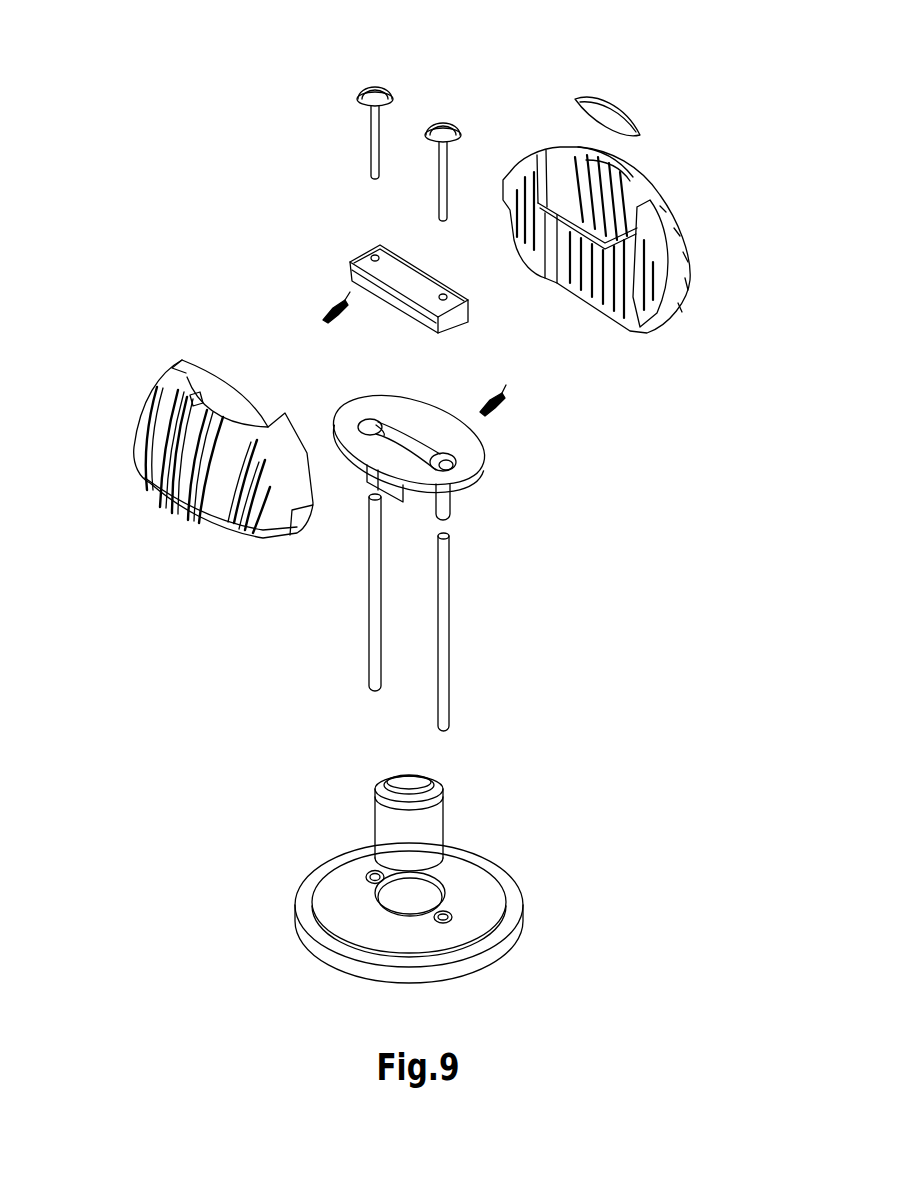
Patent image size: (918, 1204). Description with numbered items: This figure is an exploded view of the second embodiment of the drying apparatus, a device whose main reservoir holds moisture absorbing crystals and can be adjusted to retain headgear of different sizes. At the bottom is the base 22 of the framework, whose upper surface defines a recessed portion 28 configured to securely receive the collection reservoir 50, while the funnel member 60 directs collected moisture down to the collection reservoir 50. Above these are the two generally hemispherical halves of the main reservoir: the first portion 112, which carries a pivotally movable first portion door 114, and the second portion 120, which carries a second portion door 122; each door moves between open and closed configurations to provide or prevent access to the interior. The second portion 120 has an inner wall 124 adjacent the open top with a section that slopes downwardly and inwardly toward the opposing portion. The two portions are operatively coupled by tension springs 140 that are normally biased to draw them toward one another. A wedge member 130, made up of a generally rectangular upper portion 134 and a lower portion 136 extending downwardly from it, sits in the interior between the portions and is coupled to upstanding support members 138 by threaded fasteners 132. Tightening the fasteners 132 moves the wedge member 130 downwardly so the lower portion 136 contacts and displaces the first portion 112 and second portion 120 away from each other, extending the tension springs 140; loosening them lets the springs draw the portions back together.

The base 22 is at (407, 913).
The recessed portion 28 is at (390, 890).
The collection reservoir 50 is at (446, 827).
The funnel member 60 is at (515, 467).
The first portion 112 is at (177, 433).
The first portion door 114 is at (203, 388).
The second portion 120 is at (642, 223).
The second portion door 122 is at (634, 115).
The inner wall 124 is at (566, 162).
The wedge member 130 is at (348, 292).
The threaded fasteners 132 is at (375, 86).
The upper portion 134 is at (433, 285).
The lower portion 136 is at (397, 297).
The support members 138 is at (449, 644).
The tension springs 140 is at (320, 318).